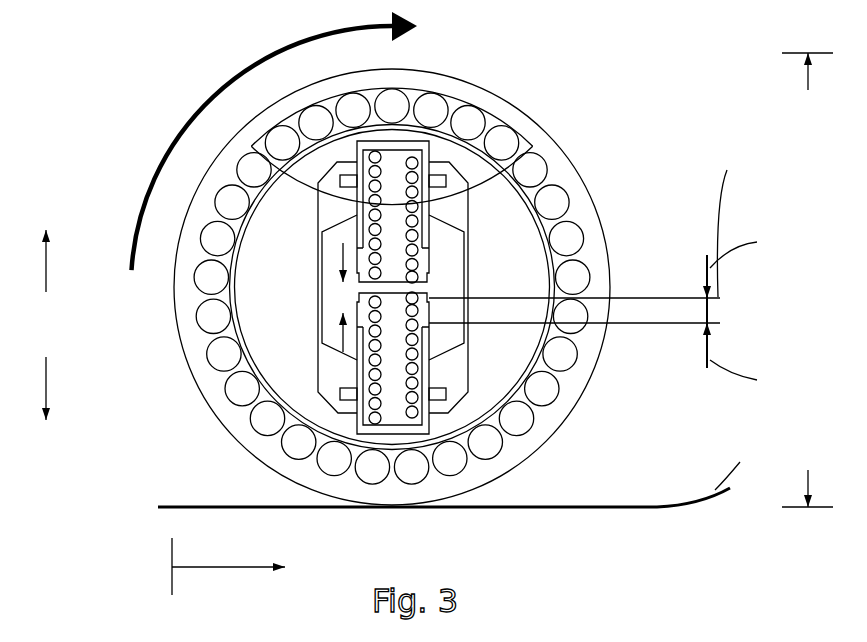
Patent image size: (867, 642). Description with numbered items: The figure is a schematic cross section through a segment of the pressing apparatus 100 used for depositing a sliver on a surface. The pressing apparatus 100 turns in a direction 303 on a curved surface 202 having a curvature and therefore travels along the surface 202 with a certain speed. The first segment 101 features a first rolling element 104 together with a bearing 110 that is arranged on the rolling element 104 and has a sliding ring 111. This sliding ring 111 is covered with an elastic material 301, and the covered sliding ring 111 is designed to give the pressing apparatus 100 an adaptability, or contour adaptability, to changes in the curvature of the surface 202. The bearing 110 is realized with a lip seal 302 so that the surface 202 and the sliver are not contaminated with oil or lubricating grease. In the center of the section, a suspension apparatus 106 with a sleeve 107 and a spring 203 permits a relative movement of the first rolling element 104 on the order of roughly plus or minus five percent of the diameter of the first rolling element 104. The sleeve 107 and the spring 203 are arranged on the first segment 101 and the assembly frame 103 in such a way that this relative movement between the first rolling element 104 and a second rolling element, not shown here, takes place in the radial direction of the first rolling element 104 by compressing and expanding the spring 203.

The pressing apparatus 100 is at (652, 82).
The first segment 101 is at (545, 108).
The assembly frame 103 is at (452, 265).
The first rolling element 104 is at (185, 297).
The suspension apparatus 106 is at (437, 337).
The sleeve 107 is at (447, 392).
The bearing 110 is at (248, 290).
The sliding ring 111 is at (262, 348).
The curved surface 202 is at (660, 505).
The spring 203 is at (415, 368).
The elastic material 301 is at (457, 103).
The lip seal 302 is at (273, 440).
The direction of rotation 303 is at (180, 130).